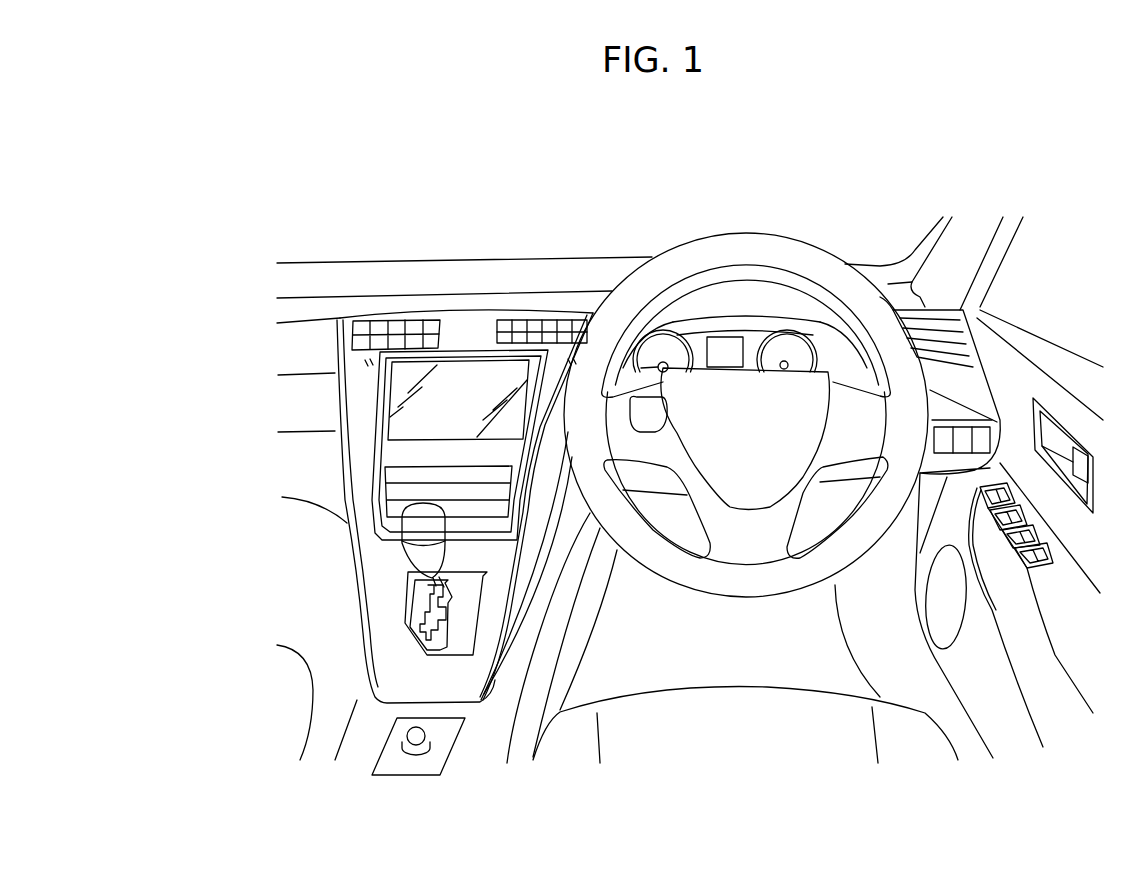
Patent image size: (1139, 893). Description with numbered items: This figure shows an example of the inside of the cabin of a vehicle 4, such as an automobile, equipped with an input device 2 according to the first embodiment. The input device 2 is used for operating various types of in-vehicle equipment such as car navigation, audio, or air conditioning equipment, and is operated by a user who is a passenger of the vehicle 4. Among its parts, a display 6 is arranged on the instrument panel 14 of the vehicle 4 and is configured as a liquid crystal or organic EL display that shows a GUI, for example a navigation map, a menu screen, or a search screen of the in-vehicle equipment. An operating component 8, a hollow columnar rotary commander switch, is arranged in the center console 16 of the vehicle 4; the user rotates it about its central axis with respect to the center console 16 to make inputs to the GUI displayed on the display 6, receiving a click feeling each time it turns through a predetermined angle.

The input device 2 is at (361, 473).
The vehicle 4 is at (960, 160).
The display 6 is at (483, 368).
The operating component 8 is at (432, 744).
The instrument panel 14 is at (357, 407).
The center console 16 is at (363, 742).